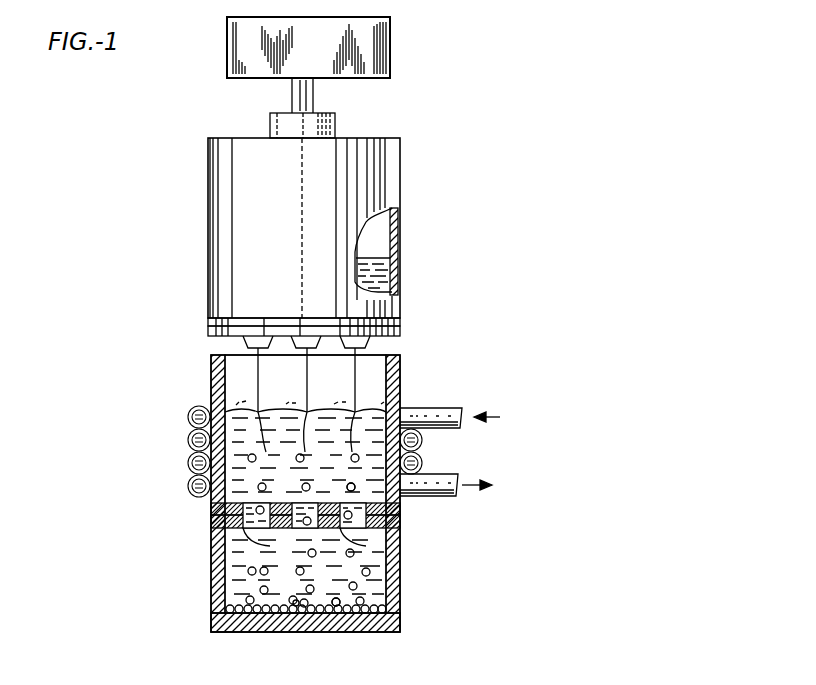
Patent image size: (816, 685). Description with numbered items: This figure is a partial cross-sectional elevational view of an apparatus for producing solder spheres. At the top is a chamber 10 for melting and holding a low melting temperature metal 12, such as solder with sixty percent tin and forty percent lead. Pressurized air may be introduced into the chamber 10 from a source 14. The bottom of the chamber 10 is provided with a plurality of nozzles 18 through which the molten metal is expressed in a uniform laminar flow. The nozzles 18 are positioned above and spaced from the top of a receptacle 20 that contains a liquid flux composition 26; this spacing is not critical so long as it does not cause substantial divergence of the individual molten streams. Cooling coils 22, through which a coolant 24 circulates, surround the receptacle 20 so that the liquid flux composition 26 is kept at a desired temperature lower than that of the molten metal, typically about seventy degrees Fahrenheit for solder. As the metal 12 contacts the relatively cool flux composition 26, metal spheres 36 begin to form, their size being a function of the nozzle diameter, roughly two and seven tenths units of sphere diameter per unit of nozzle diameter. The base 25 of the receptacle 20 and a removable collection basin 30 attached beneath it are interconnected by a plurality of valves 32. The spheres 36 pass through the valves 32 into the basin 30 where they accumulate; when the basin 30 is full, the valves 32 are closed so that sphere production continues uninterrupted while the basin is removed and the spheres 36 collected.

The chamber 10 is at (344, 228).
The low melting temperature metal 12 is at (374, 258).
The source 14 is at (392, 50).
The nozzles 18 is at (250, 345).
The receptacle 20 is at (400, 394).
The cooling coils 22 is at (455, 410).
The coolant 24 is at (195, 440).
The base 25 is at (287, 530).
The liquid flux composition 26 is at (246, 428).
The removable collection basin 30 is at (400, 606).
The valves 32 is at (250, 530).
The metal spheres 36 is at (360, 488).